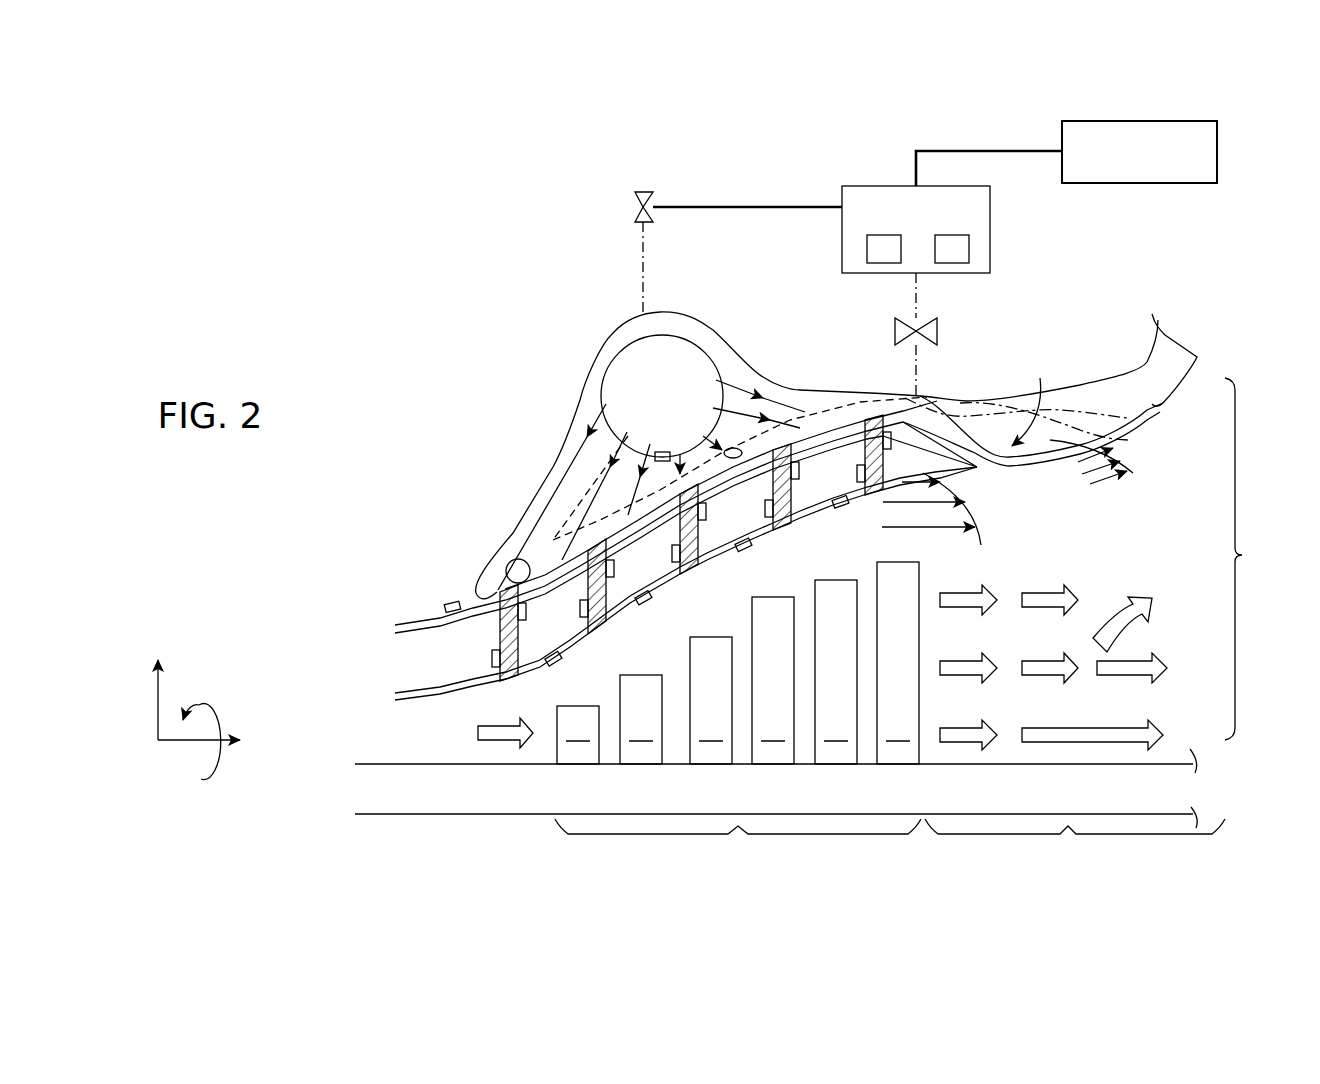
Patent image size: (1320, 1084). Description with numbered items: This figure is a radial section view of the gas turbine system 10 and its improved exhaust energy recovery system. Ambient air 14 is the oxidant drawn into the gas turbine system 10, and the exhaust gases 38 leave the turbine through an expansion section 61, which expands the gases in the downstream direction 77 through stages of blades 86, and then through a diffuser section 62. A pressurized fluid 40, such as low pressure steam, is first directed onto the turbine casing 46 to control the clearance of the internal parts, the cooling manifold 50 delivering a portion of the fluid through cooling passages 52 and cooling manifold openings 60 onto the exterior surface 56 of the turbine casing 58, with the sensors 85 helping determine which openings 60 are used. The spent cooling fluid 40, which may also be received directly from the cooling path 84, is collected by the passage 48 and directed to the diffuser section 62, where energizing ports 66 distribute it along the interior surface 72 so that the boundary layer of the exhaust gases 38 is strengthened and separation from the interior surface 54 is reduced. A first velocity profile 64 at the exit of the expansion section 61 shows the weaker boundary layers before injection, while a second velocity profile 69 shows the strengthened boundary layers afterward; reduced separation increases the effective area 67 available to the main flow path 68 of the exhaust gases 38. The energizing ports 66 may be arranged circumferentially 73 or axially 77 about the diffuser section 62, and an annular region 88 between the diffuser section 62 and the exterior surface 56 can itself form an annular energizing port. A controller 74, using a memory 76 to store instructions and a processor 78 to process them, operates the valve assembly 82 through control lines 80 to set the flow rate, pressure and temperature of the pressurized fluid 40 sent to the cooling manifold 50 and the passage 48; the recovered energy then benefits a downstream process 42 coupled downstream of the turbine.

The gas turbine system 10 is at (663, 536).
The ambient air 14 is at (890, 255).
The exhaust gases 38 is at (960, 612).
The pressurized fluid 40 is at (745, 206).
The downstream process 42 is at (1218, 152).
The turbine casing 46 is at (665, 550).
The passage 48 is at (949, 380).
The cooling manifold 50 is at (750, 356).
The cooling passages 52 is at (573, 497).
The interior surface 54 is at (1180, 386).
The exterior surface 56 is at (408, 615).
The turbine casing 58 is at (380, 532).
The cooling manifold openings 60 is at (506, 563).
The expansion section 61 is at (738, 862).
The diffuser section 62 is at (1075, 862).
The first velocity profile 64 is at (993, 508).
The energizing ports 66 is at (1105, 387).
The effective area 67 is at (1243, 556).
The main flow path 68 is at (1125, 658).
The second velocity profile 69 is at (1136, 454).
The interior surface 72 is at (1158, 404).
The circumferential direction 73 is at (1095, 376).
The controller 74 is at (992, 211).
The memory 76 is at (969, 248).
The axial axis 77 is at (178, 746).
The processor 78 is at (867, 249).
The control lines 80 is at (640, 266).
The valve assembly 82 is at (634, 213).
The cooling path 84 is at (872, 414).
The sensors 85 is at (450, 603).
The blades 86 is at (738, 663).
The annular region 88 is at (697, 801).